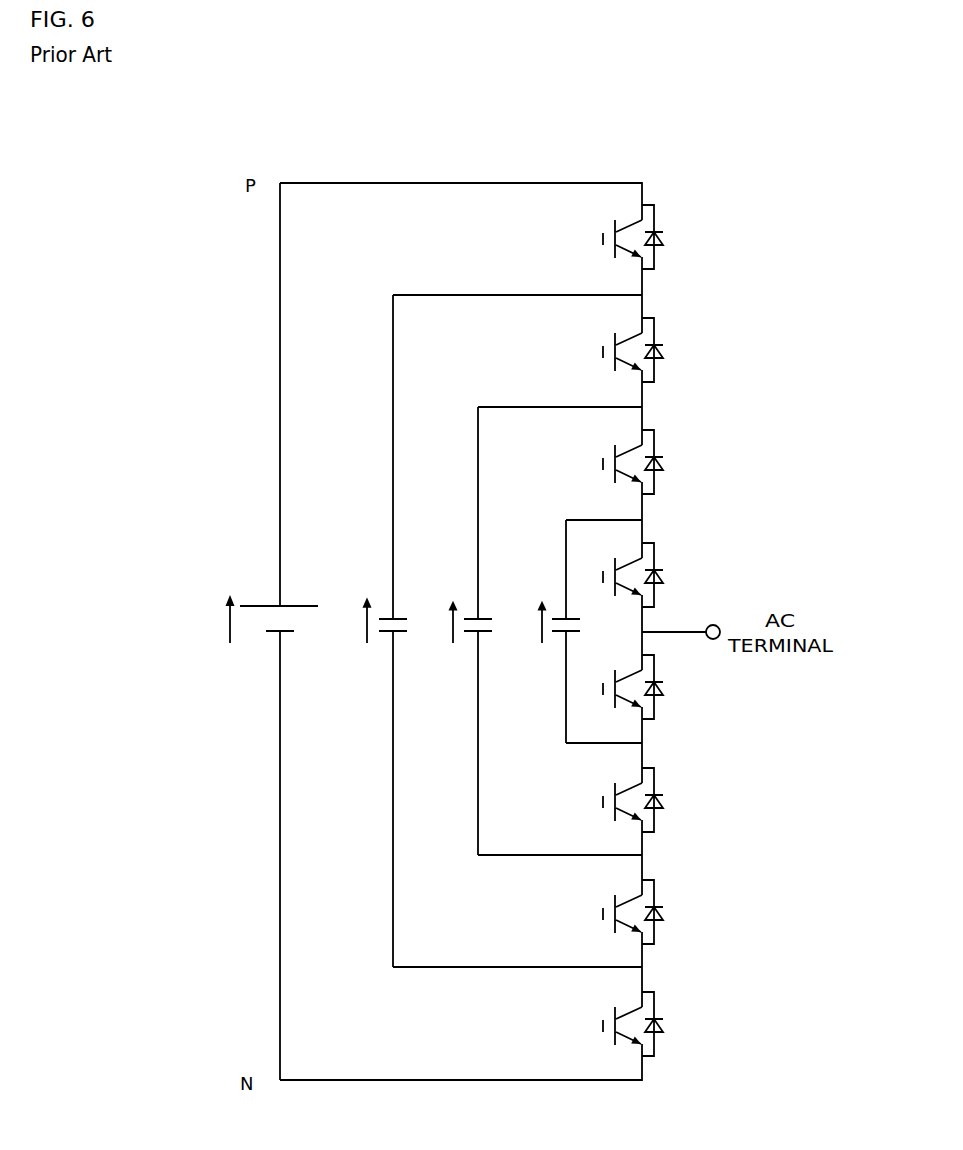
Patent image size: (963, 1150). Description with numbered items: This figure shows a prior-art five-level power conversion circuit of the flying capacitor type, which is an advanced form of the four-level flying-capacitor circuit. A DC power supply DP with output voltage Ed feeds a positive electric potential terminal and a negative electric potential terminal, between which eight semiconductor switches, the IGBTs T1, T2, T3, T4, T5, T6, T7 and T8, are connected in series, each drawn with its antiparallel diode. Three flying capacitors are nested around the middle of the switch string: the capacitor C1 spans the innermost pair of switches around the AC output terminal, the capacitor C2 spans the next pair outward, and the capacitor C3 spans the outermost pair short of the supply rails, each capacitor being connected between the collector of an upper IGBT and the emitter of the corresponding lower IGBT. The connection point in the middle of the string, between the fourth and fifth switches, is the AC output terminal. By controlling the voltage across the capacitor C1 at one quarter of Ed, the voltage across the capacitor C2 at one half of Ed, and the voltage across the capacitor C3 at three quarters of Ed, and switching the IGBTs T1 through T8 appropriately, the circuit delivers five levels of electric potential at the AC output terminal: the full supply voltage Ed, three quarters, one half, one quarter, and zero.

The IGBT T1 is at (651, 237).
The IGBT T2 is at (651, 350).
The IGBT T3 is at (651, 462).
The IGBT T4 is at (651, 575).
The IGBT T5 is at (651, 687).
The IGBT T6 is at (651, 800).
The IGBT T7 is at (651, 912).
The IGBT T8 is at (651, 1024).
The capacitor C1 is at (541, 631).
The capacitor C2 is at (453, 631).
The capacitor C3 is at (357, 631).
The DC power supply DP is at (279, 631).
The output voltage of the DC power supply Ed is at (213, 619).